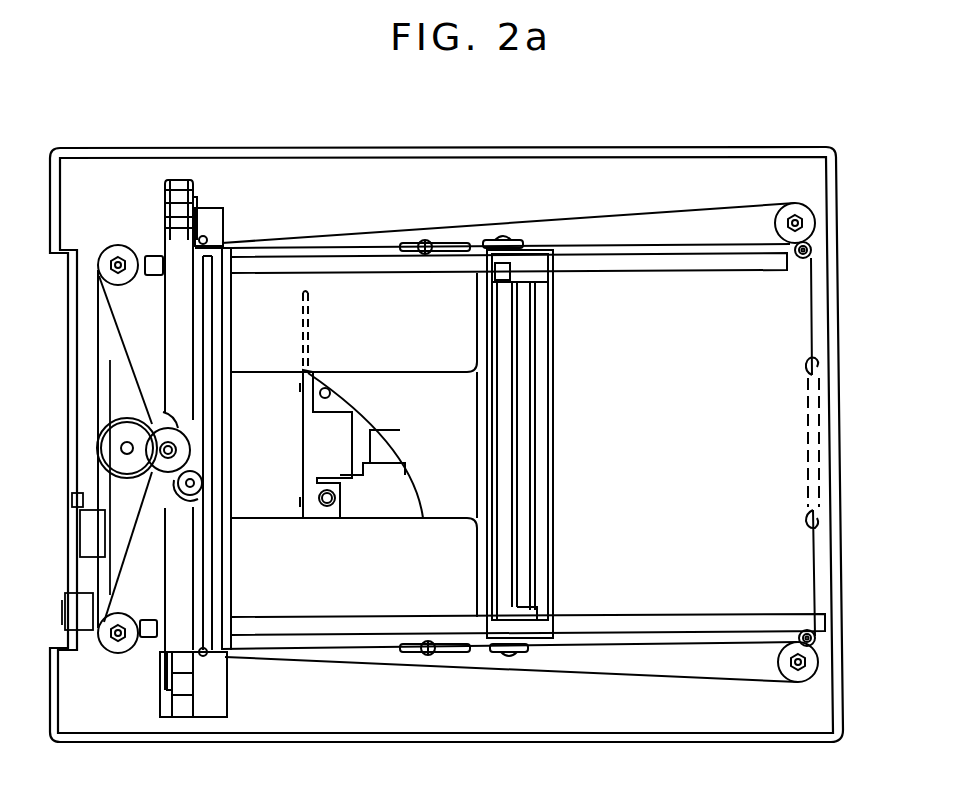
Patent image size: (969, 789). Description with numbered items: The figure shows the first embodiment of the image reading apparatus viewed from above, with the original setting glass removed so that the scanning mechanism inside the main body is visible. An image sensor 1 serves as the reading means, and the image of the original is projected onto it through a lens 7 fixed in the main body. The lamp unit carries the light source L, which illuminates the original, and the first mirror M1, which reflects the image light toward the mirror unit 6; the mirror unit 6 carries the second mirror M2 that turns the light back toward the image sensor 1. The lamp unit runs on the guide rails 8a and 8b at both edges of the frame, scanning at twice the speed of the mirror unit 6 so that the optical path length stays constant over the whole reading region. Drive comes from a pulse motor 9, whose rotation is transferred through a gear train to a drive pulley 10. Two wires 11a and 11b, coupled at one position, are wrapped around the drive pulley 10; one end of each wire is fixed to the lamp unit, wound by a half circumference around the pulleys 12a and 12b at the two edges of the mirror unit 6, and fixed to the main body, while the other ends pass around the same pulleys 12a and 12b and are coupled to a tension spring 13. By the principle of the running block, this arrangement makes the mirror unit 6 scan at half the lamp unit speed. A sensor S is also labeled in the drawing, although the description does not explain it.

The image sensor 1 is at (315, 515).
The mirror unit 6 is at (537, 600).
The lens 7 is at (383, 457).
The guide rail 8a is at (827, 622).
The guide rail 8b is at (787, 257).
The pulse motor 9 is at (190, 484).
The drive pulley 10 is at (110, 448).
The wire 11a is at (745, 682).
The wire 11b is at (782, 197).
The pulley 12a is at (490, 655).
The pulley 12b is at (488, 238).
The tension spring 13 is at (818, 490).
The light source L is at (183, 690).
The sensor S is at (212, 712).
The first mirror M1 is at (212, 653).
The second mirror M2 is at (532, 622).